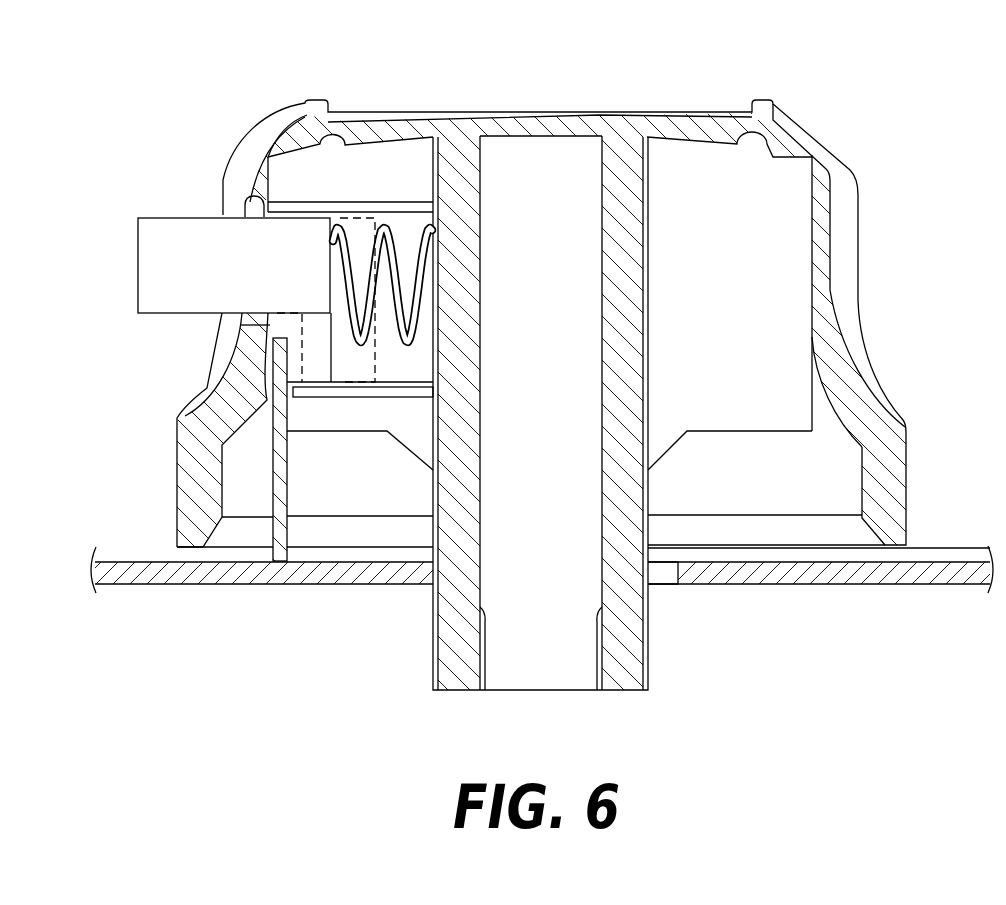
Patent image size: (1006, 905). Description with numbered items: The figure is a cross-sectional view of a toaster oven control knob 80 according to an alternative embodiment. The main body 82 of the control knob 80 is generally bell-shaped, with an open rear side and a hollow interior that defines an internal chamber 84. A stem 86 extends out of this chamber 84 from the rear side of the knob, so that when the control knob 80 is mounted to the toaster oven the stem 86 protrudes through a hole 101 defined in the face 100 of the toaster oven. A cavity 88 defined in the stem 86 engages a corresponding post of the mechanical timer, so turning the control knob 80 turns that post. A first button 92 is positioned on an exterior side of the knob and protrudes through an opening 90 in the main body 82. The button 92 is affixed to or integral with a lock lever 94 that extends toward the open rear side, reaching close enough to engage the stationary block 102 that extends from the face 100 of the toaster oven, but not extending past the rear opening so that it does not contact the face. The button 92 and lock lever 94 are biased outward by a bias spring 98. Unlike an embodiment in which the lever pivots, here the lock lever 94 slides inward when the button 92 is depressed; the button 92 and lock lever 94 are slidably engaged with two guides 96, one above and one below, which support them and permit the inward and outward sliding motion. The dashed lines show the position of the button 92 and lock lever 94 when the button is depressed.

The toaster oven control knob 80 is at (862, 72).
The main body 82 is at (893, 497).
The internal chamber 84 is at (827, 457).
The stem 86 is at (627, 652).
The cavity 88 is at (528, 655).
The opening 90 is at (262, 212).
The first button 92 is at (157, 217).
The lock lever 94 is at (270, 324).
The guides 96 is at (322, 200).
The bias spring 98 is at (383, 230).
The face 100 is at (935, 584).
The hole 101 is at (660, 584).
The stationary block 102 is at (283, 460).